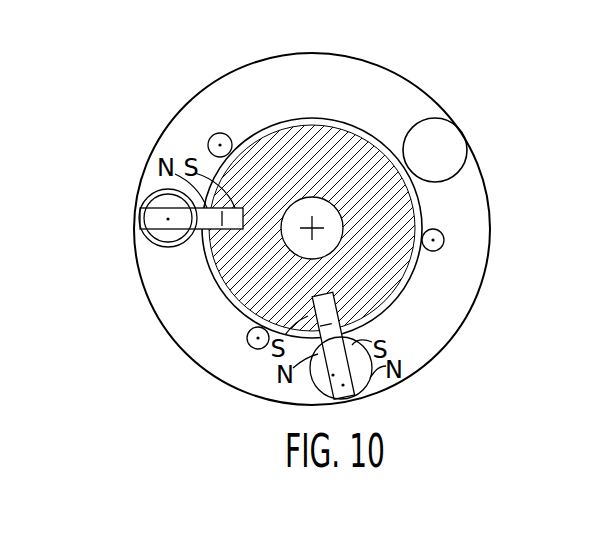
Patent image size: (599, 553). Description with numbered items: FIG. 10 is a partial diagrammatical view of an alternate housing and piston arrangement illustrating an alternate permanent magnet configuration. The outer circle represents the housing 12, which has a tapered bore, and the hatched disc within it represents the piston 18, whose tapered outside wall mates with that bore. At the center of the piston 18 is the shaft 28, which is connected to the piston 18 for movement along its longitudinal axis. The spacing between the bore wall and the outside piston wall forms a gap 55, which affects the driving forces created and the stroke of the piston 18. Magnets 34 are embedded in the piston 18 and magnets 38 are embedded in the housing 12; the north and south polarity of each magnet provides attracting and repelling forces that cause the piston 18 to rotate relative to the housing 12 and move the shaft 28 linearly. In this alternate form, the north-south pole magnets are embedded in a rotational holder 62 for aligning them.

The housing 12 is at (448, 306).
The piston 18 is at (392, 277).
The shaft 28 is at (350, 222).
The magnets 34 is at (212, 243).
The magnets 38 is at (135, 221).
The gap 55 is at (284, 118).
The rotational holder 62 is at (460, 145).